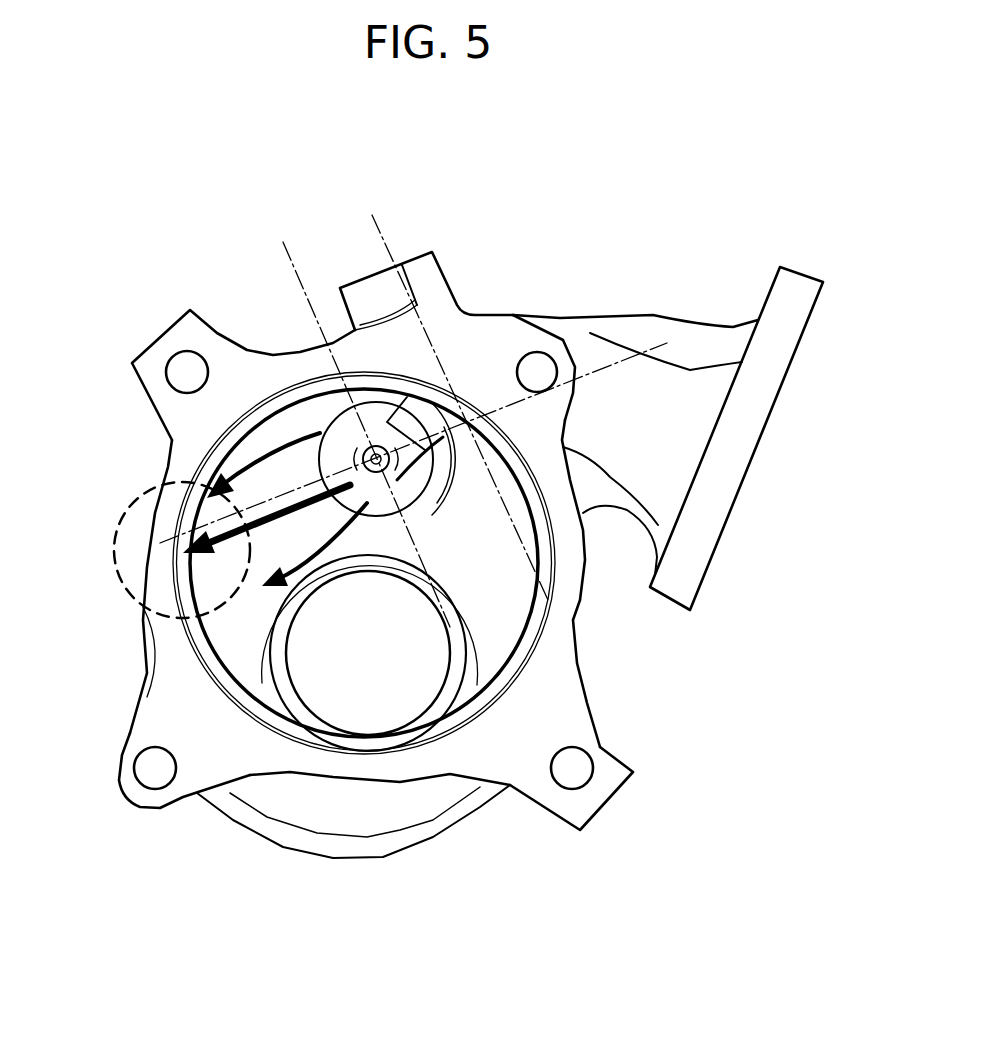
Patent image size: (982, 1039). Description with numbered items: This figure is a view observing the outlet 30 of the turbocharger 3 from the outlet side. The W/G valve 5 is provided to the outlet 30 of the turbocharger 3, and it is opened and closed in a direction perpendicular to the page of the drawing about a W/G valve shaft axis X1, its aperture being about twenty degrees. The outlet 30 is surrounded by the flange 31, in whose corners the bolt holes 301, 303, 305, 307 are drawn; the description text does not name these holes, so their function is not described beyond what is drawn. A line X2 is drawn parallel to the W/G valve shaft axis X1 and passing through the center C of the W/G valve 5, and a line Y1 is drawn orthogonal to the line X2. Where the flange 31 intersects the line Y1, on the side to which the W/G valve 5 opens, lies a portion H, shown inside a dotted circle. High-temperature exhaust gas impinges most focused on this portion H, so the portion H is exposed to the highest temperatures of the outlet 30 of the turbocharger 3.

The turbocharger 3 is at (608, 230).
The outlet 30 is at (502, 303).
The flange 31 is at (565, 708).
The bolt hole 301 is at (538, 353).
The bolt hole 303 is at (592, 778).
The bolt hole 305 is at (138, 775).
The bolt hole 307 is at (182, 355).
The W/G valve 5 is at (322, 428).
The center of the W/G valve C is at (373, 456).
The portion H is at (125, 515).
The W/G valve shaft axis X1 is at (376, 220).
The line X2 is at (285, 247).
The line Y1 is at (656, 343).